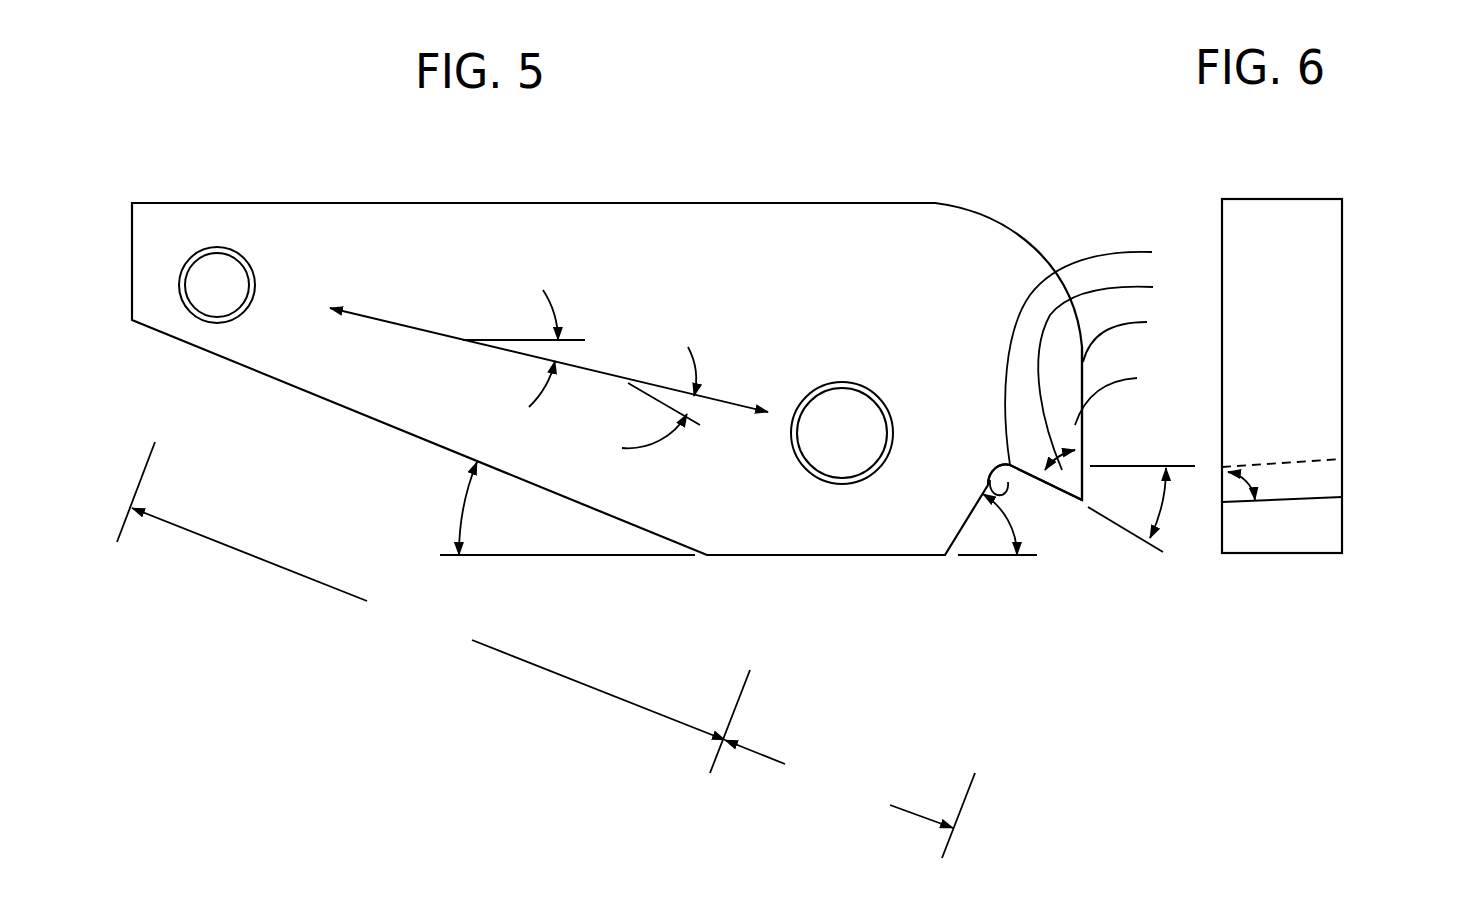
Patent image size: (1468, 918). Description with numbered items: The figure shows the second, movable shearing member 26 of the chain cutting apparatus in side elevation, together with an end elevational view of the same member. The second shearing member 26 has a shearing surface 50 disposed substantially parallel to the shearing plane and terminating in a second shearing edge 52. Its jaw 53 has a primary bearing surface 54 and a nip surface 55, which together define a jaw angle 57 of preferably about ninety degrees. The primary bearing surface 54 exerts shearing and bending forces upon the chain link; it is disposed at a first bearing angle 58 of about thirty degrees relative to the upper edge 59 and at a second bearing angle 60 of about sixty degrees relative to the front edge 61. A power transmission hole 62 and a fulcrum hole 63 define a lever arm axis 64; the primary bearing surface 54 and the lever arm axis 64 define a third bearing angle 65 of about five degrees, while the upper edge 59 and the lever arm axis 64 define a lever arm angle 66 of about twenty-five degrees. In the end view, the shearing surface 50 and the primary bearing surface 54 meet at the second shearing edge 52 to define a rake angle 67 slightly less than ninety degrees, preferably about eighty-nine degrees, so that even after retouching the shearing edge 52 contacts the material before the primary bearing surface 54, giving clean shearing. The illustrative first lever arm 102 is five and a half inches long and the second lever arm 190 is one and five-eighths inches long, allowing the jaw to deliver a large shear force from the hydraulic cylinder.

In FIG. 5, the second shearing member 26 is at (190, 202).
In FIG. 6, the second shearing member 26 is at (1200, 192).
In FIG. 5, the shearing surface 50 is at (1124, 389).
In FIG. 6, the shearing surface 50 is at (1222, 485).
In FIG. 5, the second shearing edge 52 is at (1062, 490).
In FIG. 6, the second shearing edge 52 is at (1222, 502).
In FIG. 5, the jaw 53 is at (1098, 347).
In FIG. 5, the primary bearing surface 54 is at (1072, 496).
In FIG. 6, the primary bearing surface 54 is at (1277, 502).
In FIG. 5, the nip surface 55 is at (997, 470).
In FIG. 6, the nip surface 55 is at (1323, 528).
In FIG. 5, the jaw angle 57 is at (1000, 524).
In FIG. 5, the first bearing angle 58 is at (1160, 505).
In FIG. 5, the upper edge 59 is at (648, 202).
In FIG. 5, the second bearing angle 60 is at (1115, 367).
In FIG. 5, the front edge 61 is at (1137, 331).
In FIG. 5, the power transmission hole 62 is at (217, 323).
In FIG. 5, the fulcrum hole 63 is at (810, 473).
In FIG. 5, the lever arm axis 64 is at (393, 324).
In FIG. 5, the third bearing angle 65 is at (693, 410).
In FIG. 5, the lever arm angle 66 is at (560, 352).
In FIG. 6, the rake angle 67 is at (1250, 478).
In FIG. 5, the first lever arm 102 is at (433, 607).
In FIG. 5, the second lever arm 190 is at (850, 799).